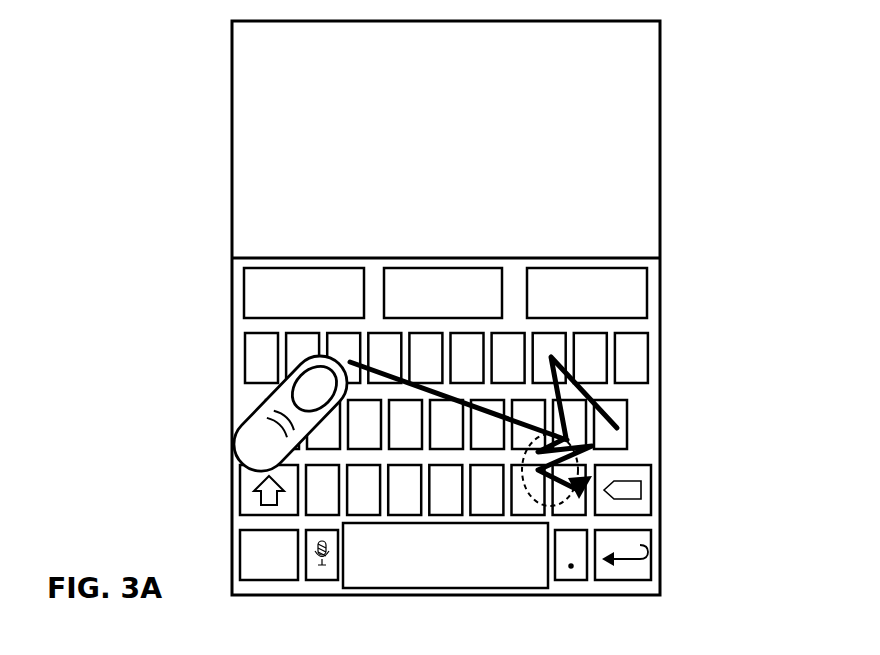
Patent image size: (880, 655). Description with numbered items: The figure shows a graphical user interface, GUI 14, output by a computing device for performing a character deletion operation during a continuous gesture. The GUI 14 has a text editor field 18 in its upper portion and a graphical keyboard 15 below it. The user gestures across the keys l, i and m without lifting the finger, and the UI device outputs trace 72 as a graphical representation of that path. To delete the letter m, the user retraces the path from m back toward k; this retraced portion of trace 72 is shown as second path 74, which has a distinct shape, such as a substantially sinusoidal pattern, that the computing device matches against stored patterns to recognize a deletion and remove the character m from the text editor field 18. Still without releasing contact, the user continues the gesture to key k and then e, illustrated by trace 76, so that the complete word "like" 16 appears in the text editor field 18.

The GUI 14 is at (670, 53).
The keyboard 15 is at (753, 326).
The word "like" 16 is at (313, 80).
The text editor field 18 is at (757, 21).
The trace 72 is at (590, 390).
The second path 74 is at (522, 484).
The trace 76 is at (397, 367).